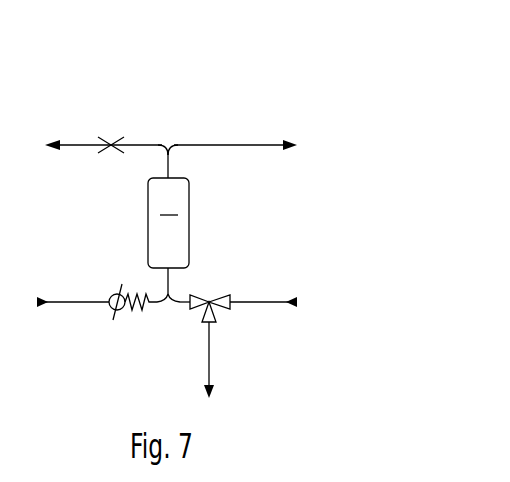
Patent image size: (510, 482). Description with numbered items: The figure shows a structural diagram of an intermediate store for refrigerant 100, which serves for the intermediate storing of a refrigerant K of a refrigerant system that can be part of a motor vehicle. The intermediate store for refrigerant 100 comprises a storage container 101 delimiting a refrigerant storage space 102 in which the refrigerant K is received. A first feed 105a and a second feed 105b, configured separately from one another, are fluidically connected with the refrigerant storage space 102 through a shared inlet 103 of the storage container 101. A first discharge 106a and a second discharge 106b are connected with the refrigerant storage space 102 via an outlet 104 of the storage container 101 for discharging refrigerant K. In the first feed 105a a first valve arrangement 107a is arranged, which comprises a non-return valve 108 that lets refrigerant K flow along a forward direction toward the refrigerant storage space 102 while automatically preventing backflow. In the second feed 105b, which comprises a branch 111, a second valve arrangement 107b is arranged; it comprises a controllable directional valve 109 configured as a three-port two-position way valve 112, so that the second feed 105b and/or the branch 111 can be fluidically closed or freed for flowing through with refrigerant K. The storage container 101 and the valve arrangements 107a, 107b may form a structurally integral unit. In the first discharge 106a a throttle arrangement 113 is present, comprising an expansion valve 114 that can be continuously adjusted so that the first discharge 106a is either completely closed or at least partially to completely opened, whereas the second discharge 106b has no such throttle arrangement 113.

The intermediate store for refrigerant 100 is at (337, 128).
The storage container 101 is at (138, 219).
The refrigerant storage space 102 is at (183, 246).
The inlet 103 is at (163, 276).
The outlet 104 is at (172, 161).
The first feed 105a is at (68, 305).
The second feed 105b is at (257, 301).
The first discharge 106a is at (75, 143).
The second discharge 106b is at (237, 143).
The first valve arrangement 107a is at (152, 336).
The second valve arrangement 107b is at (256, 272).
The non-return valve 108 is at (133, 316).
The directional valve 109 is at (256, 272).
The branch 111 is at (213, 348).
The 3/2-way valve 112 is at (211, 294).
The throttle arrangement 113 is at (145, 113).
The expansion valve 114 is at (110, 140).